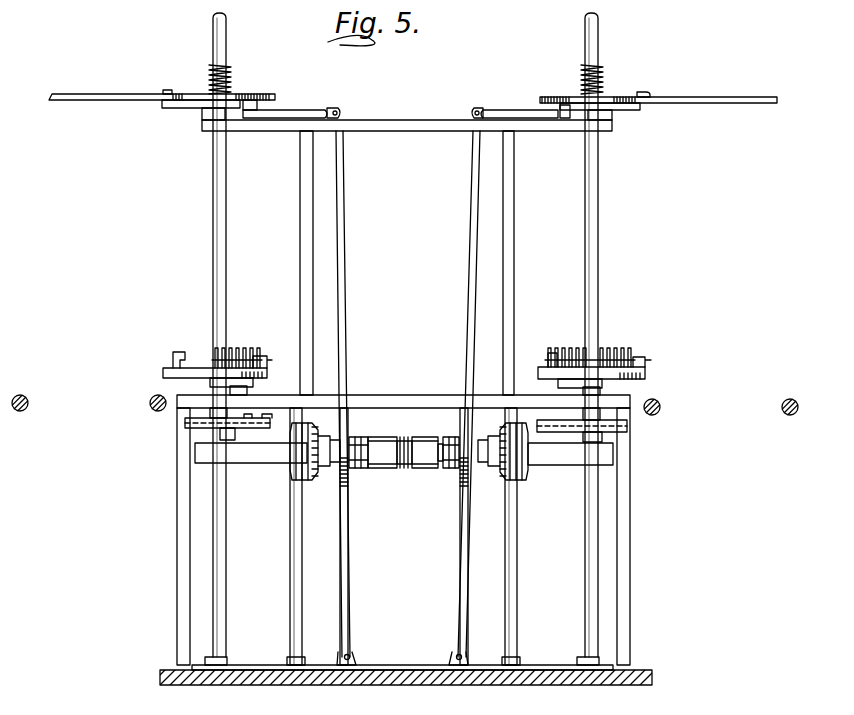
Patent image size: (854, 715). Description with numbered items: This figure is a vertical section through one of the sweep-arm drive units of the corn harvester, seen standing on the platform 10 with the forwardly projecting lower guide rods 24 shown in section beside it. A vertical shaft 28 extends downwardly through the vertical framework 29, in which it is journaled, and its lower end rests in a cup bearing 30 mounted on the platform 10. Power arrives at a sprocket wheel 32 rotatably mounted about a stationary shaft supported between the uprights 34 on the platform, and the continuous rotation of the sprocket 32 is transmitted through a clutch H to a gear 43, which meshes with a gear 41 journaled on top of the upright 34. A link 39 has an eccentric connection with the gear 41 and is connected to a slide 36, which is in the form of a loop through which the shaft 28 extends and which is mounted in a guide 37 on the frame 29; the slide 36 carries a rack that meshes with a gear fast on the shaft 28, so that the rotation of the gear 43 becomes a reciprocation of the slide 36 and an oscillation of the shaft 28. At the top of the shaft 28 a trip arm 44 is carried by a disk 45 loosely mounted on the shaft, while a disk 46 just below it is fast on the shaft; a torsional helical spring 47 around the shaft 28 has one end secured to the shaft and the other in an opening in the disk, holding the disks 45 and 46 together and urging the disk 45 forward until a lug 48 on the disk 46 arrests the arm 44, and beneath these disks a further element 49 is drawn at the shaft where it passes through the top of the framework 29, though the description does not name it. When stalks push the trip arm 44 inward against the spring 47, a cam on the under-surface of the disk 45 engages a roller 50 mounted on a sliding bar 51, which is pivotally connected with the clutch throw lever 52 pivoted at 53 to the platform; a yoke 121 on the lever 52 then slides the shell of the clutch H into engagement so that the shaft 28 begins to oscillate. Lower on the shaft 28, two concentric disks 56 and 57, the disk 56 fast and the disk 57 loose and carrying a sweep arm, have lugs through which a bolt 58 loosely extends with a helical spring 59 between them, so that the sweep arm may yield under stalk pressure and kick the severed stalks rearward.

The platform 10 is at (165, 669).
The lower guide rods 24 is at (148, 403).
The vertical shaft 28 is at (213, 40).
The vertical framework 29 is at (302, 128).
The cup bearing 30 is at (225, 660).
The sprocket wheel 32 is at (401, 470).
The uprights 34 is at (292, 535).
The slide 36 is at (198, 448).
The guide 37 is at (190, 425).
The link 39 is at (266, 416).
The gear 41 is at (310, 424).
The gear 43 is at (314, 480).
The trip arm 44 is at (97, 96).
The disk 45 is at (258, 94).
The disk 46 is at (185, 108).
The torsional helical spring 47 is at (231, 66).
The lug 48 is at (166, 89).
The block 49 is at (214, 116).
The roller 50 is at (268, 110).
The sliding bar 51 is at (338, 108).
The clutch throw lever 52 is at (345, 216).
The pivot 53 is at (250, 383).
The disk 56 is at (163, 374).
The disk 57 is at (172, 364).
The bolt 58 is at (265, 357).
The helical spring 59 is at (231, 347).
The yoke 121 is at (350, 433).
The clutch H is at (358, 470).